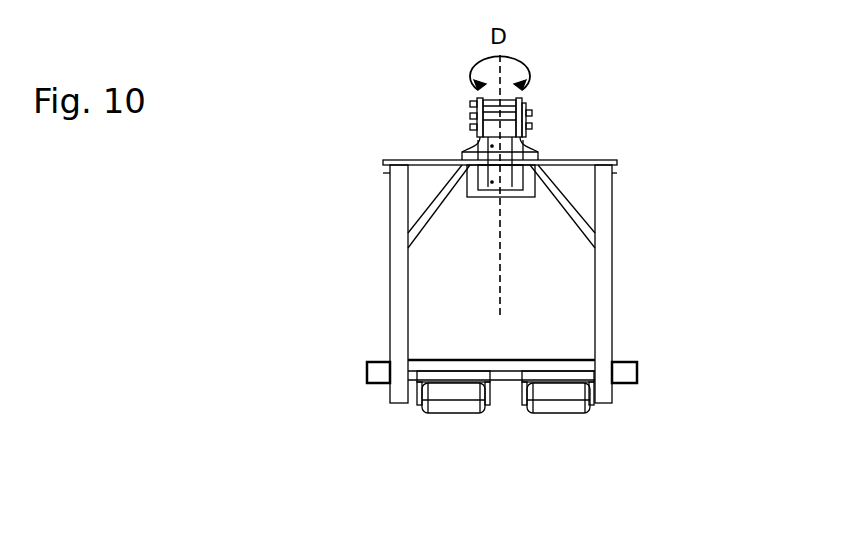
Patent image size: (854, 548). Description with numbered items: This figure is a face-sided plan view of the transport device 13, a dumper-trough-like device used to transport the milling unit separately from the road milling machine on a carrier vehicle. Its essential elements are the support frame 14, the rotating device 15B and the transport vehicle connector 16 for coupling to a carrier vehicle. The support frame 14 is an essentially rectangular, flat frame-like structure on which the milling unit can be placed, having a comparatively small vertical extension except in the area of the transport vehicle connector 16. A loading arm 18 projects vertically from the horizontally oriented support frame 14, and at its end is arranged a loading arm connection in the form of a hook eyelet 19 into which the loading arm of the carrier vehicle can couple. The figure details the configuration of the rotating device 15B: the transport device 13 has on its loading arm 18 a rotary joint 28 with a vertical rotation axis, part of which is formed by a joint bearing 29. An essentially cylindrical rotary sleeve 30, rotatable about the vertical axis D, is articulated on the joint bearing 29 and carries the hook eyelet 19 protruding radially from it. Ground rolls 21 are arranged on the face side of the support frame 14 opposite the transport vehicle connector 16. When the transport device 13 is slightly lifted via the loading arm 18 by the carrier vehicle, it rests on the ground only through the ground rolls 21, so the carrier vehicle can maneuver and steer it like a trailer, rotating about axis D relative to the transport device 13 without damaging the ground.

The transport device 13 is at (612, 121).
The support frame 14 is at (437, 363).
The rotating device 15B is at (482, 128).
The transport vehicle connector 16 is at (482, 151).
The loading arm 18 is at (403, 303).
The hook eyelet 19 is at (511, 111).
The ground rolls 21 is at (553, 398).
The rotary joint 28 is at (518, 140).
The joint bearing 29 is at (508, 177).
The rotary sleeve 30 is at (495, 128).